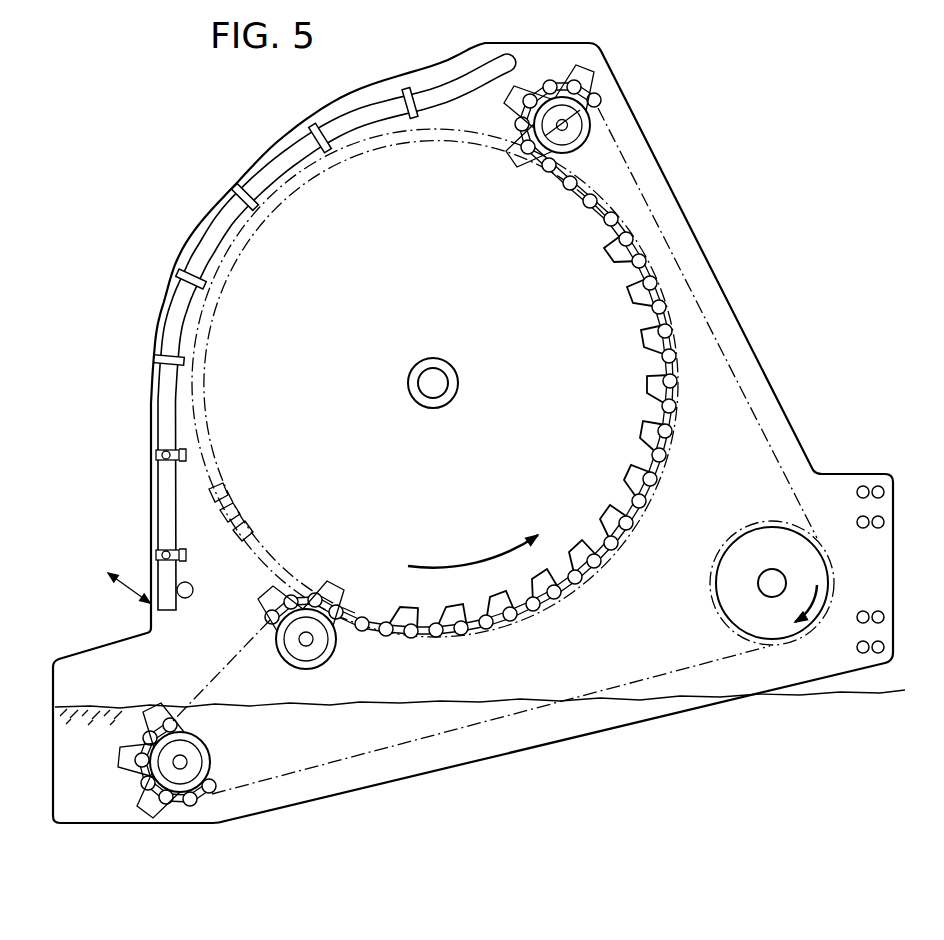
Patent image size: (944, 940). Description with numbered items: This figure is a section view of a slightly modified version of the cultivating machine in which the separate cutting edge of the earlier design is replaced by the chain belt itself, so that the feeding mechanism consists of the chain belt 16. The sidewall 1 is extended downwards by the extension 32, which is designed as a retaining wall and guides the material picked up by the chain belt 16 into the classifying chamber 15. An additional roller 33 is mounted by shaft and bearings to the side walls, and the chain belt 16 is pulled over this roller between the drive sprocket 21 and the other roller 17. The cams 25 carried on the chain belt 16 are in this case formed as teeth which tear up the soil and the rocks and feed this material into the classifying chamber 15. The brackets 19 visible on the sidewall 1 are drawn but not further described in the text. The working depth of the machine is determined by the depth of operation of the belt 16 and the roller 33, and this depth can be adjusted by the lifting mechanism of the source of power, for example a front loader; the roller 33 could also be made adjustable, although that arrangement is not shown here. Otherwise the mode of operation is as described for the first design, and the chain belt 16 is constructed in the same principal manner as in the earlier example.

The sidewall 1 is at (198, 222).
The classifying chamber 15 is at (324, 390).
The chain belt 16 is at (248, 790).
The roller 17 is at (330, 650).
The fastening brackets 19 is at (227, 422).
The drive sprocket 21 is at (714, 577).
The cams 25 is at (161, 818).
The extension 32 is at (88, 667).
The additional roller 33 is at (212, 758).